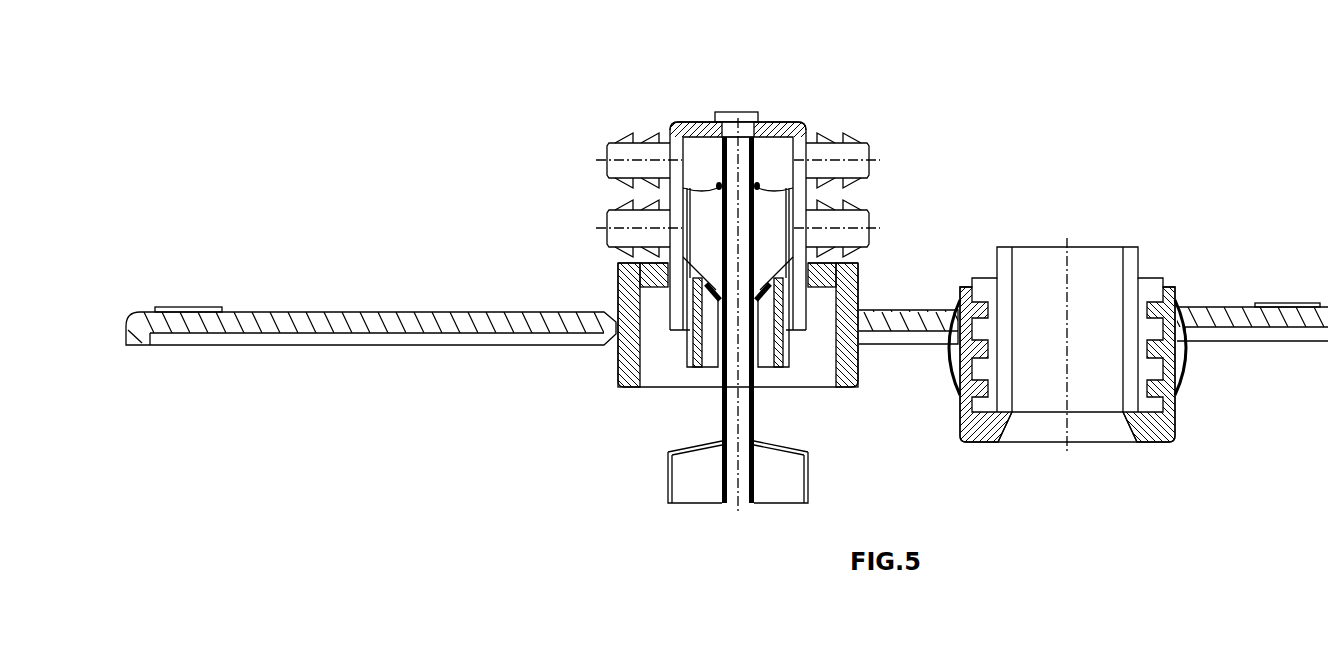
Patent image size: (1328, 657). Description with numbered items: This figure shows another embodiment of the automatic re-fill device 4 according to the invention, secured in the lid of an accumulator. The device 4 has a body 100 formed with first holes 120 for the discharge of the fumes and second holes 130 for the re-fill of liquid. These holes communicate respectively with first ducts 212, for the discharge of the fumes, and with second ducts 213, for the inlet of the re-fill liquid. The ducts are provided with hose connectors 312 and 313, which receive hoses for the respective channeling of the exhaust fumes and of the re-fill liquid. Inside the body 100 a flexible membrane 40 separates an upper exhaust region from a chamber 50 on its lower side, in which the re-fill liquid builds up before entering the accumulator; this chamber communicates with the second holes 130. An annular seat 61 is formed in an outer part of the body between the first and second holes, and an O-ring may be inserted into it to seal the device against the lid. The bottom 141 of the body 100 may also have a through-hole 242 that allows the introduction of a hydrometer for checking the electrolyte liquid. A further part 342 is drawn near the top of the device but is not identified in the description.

The automatic re-fill device 4 is at (890, 120).
The flexible membrane 40 is at (775, 150).
The chamber for the build-up of the re-fill liquid 50 is at (767, 217).
The annular seat 61 is at (642, 362).
The body 100 is at (803, 192).
The first holes 120 is at (667, 128).
The second holes 130 is at (610, 327).
The bottom of the body 141 is at (688, 122).
The first ducts 212 is at (618, 130).
The second ducts 213 is at (630, 220).
The through-hole 242 is at (742, 130).
The hose connector 312 is at (633, 150).
The hose connector 313 is at (628, 218).
The plug 342 is at (727, 108).